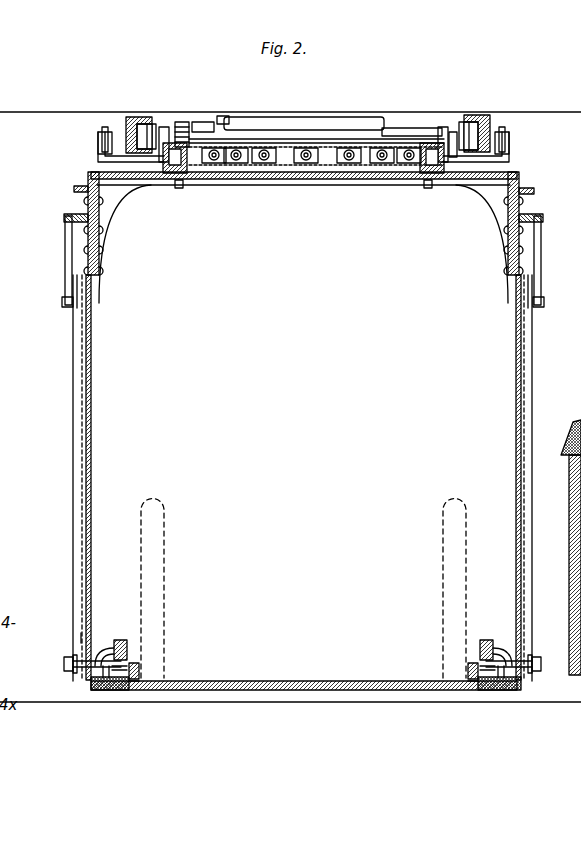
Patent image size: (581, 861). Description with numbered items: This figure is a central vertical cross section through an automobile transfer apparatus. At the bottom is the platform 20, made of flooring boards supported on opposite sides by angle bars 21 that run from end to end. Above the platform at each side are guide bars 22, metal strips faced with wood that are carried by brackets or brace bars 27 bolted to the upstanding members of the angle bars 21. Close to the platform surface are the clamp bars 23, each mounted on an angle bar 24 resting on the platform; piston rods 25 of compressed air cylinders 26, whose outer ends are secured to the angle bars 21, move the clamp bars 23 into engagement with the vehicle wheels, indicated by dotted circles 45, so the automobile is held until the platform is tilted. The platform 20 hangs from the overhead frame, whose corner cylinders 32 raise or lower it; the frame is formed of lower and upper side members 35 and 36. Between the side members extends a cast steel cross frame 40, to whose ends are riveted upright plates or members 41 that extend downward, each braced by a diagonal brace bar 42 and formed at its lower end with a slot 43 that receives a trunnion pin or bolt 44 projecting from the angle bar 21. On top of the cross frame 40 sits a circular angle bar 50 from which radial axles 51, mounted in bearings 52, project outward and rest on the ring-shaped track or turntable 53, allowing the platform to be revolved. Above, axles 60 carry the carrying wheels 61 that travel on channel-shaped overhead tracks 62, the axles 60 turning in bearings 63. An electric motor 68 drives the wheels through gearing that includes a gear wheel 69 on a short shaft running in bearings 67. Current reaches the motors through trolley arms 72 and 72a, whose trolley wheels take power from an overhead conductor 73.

The platform 20 is at (311, 683).
The angle bars 21 is at (103, 694).
The guide bars 22 is at (121, 642).
The clamp bars 23 is at (141, 672).
The angle bar 24 is at (134, 691).
The piston rods 25 is at (121, 694).
The cylinders 26 is at (109, 692).
The brackets or brace bars 27 is at (105, 650).
The cylinders 32 is at (66, 253).
The lower side members 35 is at (77, 281).
The upper side members 36 is at (81, 189).
The cross frame 40 is at (326, 183).
The upright plates or members 41 is at (92, 405).
The brace bar 42 is at (73, 466).
The slot 43 is at (82, 641).
The trunnion pin or bolt 44 is at (76, 686).
The dotted circles 45 is at (166, 574).
The circular angle bar 50 is at (180, 193).
The axles 51 is at (345, 153).
The bearings 52 is at (238, 168).
The track or turntable 53 is at (172, 168).
The axles 60 is at (401, 133).
The carrying wheels 61 is at (150, 127).
The overhead tracks 62 is at (136, 120).
The bearings 63 is at (168, 130).
The bearings 67 is at (203, 124).
The electric motor 68 is at (302, 121).
The gear wheel 69 is at (235, 118).
The trolley arm 72 is at (99, 150).
The trolley arm 72a is at (513, 162).
The overhead conductor 73 is at (104, 137).